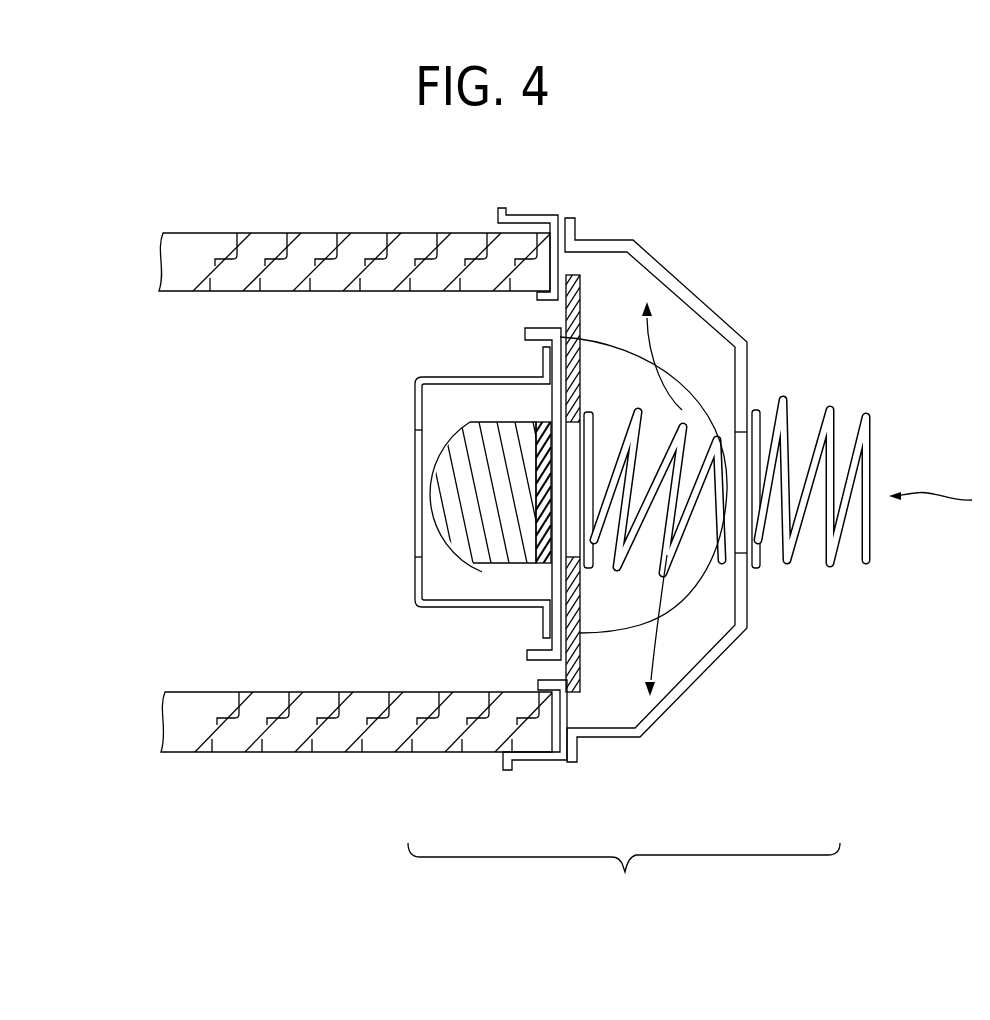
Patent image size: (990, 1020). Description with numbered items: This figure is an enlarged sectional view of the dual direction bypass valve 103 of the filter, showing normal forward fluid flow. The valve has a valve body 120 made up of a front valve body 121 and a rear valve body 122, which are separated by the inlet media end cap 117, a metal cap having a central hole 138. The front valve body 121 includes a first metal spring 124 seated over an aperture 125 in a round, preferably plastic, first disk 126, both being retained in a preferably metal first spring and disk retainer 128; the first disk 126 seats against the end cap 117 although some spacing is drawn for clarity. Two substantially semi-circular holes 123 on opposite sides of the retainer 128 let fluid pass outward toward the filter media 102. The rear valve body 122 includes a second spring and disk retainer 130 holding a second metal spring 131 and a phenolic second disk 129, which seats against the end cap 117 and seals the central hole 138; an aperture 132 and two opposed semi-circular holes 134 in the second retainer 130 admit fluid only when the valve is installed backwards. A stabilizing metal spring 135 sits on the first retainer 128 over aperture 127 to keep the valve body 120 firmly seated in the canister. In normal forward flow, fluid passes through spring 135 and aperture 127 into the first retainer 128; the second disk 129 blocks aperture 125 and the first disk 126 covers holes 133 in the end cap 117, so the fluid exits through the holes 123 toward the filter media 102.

The filter media 102 is at (217, 240).
The dual direction bypass valve 103 is at (620, 212).
The inlet media end cap 117 is at (537, 217).
The valve body 120 is at (624, 879).
The front valve body 121 is at (714, 289).
The rear valve body 122 is at (433, 362).
The semi-circular holes 123 is at (548, 517).
The first metal spring 124 is at (738, 452).
The aperture 125 is at (590, 572).
The first disk 126 is at (581, 297).
The aperture 127 is at (758, 412).
The first spring and disk retainer 128 is at (738, 332).
The second disk 129 is at (500, 570).
The second spring and disk retainer 130 is at (413, 388).
The second metal spring 131 is at (470, 552).
The aperture 132 is at (415, 508).
The holes 133 is at (540, 317).
The semi-circular holes 134 is at (443, 457).
The stabilizing metal spring 135 is at (843, 562).
The central hole 138 is at (683, 583).